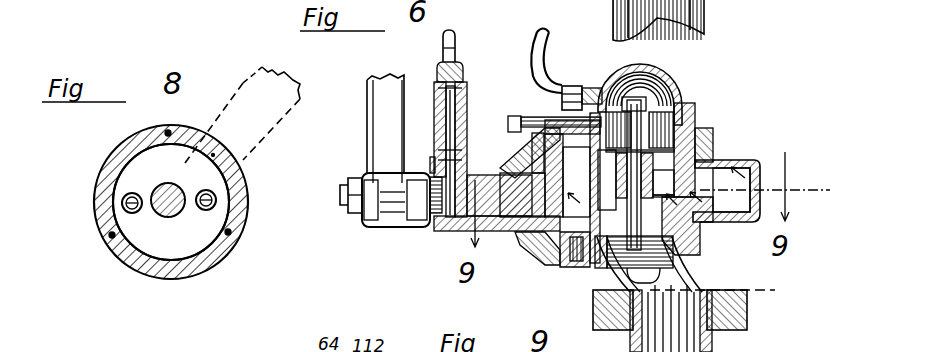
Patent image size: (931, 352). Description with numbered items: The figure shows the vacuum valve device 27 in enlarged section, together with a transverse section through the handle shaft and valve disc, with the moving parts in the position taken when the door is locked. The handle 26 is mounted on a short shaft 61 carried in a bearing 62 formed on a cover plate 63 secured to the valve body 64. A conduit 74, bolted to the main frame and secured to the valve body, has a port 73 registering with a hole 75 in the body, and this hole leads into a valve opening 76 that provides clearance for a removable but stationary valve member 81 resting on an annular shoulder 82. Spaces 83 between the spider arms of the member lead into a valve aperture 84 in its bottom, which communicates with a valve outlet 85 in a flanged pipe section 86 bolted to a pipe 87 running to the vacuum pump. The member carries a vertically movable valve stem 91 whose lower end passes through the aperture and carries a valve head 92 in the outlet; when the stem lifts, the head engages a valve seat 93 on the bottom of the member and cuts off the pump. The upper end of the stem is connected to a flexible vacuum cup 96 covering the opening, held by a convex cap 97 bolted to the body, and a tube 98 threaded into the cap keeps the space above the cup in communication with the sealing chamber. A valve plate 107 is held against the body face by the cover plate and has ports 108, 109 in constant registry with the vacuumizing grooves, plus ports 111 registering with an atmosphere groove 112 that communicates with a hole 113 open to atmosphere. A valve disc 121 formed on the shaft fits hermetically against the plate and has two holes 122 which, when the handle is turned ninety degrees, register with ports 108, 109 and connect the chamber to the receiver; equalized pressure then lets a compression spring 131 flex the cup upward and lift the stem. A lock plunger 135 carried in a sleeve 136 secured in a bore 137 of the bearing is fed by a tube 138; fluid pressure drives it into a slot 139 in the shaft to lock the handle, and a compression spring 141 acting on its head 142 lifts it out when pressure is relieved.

In FIG. 8, the handle 26 is at (245, 82).
In FIG. 6, the handle 26 is at (385, 128).
In FIG. 6, the vacuum valve device 27 is at (714, 94).
In FIG. 8, the shaft 61 is at (167, 210).
In FIG. 6, the shaft 61 is at (340, 205).
In FIG. 6, the bearing 62 is at (446, 231).
In FIG. 8, the cover plate 63 is at (155, 262).
In FIG. 6, the cover plate 63 is at (532, 250).
In FIG. 6, the valve body 64 is at (583, 90).
In FIG. 6, the port 73 is at (756, 162).
In FIG. 6, the conduit 74 is at (762, 162).
In FIG. 6, the hole 75 is at (727, 206).
In FIG. 6, the valve opening 76 is at (716, 136).
In FIG. 6, the valve member 81 is at (712, 152).
In FIG. 6, the annular shoulder 82 is at (606, 214).
In FIG. 6, the spaces 83 is at (706, 220).
In FIG. 6, the valve aperture 84 is at (702, 251).
In FIG. 6, the valve outlet 85 is at (722, 279).
In FIG. 6, the flanged pipe section 86 is at (748, 302).
In FIG. 6, the pipe 87 is at (706, 13).
In FIG. 6, the valve stem 91 is at (668, 82).
In FIG. 6, the valve head 92 is at (602, 262).
In FIG. 6, the valve seat 93 is at (578, 262).
In FIG. 6, the vacuum cup 96 is at (690, 96).
In FIG. 6, the convex cap 97 is at (641, 71).
In FIG. 6, the tube 98 is at (553, 42).
In FIG. 6, the valve plate 107 is at (512, 132).
In FIG. 8, the port 108 is at (215, 203).
In FIG. 8, the port 109 is at (124, 207).
In FIG. 6, the ports 111 is at (546, 118).
In FIG. 6, the atmosphere groove 112 is at (497, 218).
In FIG. 6, the hole 113 is at (540, 256).
In FIG. 8, the valve disc 121 is at (205, 232).
In FIG. 6, the valve disc 121 is at (518, 152).
In FIG. 8, the holes 122 is at (191, 187).
In FIG. 6, the compression spring 131 is at (697, 116).
In FIG. 6, the lock plunger 135 is at (432, 143).
In FIG. 6, the sleeve 136 is at (432, 150).
In FIG. 6, the bore 137 is at (423, 164).
In FIG. 6, the tube 138 is at (453, 40).
In FIG. 6, the slot 139 is at (440, 233).
In FIG. 6, the compression spring 141 is at (470, 102).
In FIG. 6, the head 142 is at (460, 90).